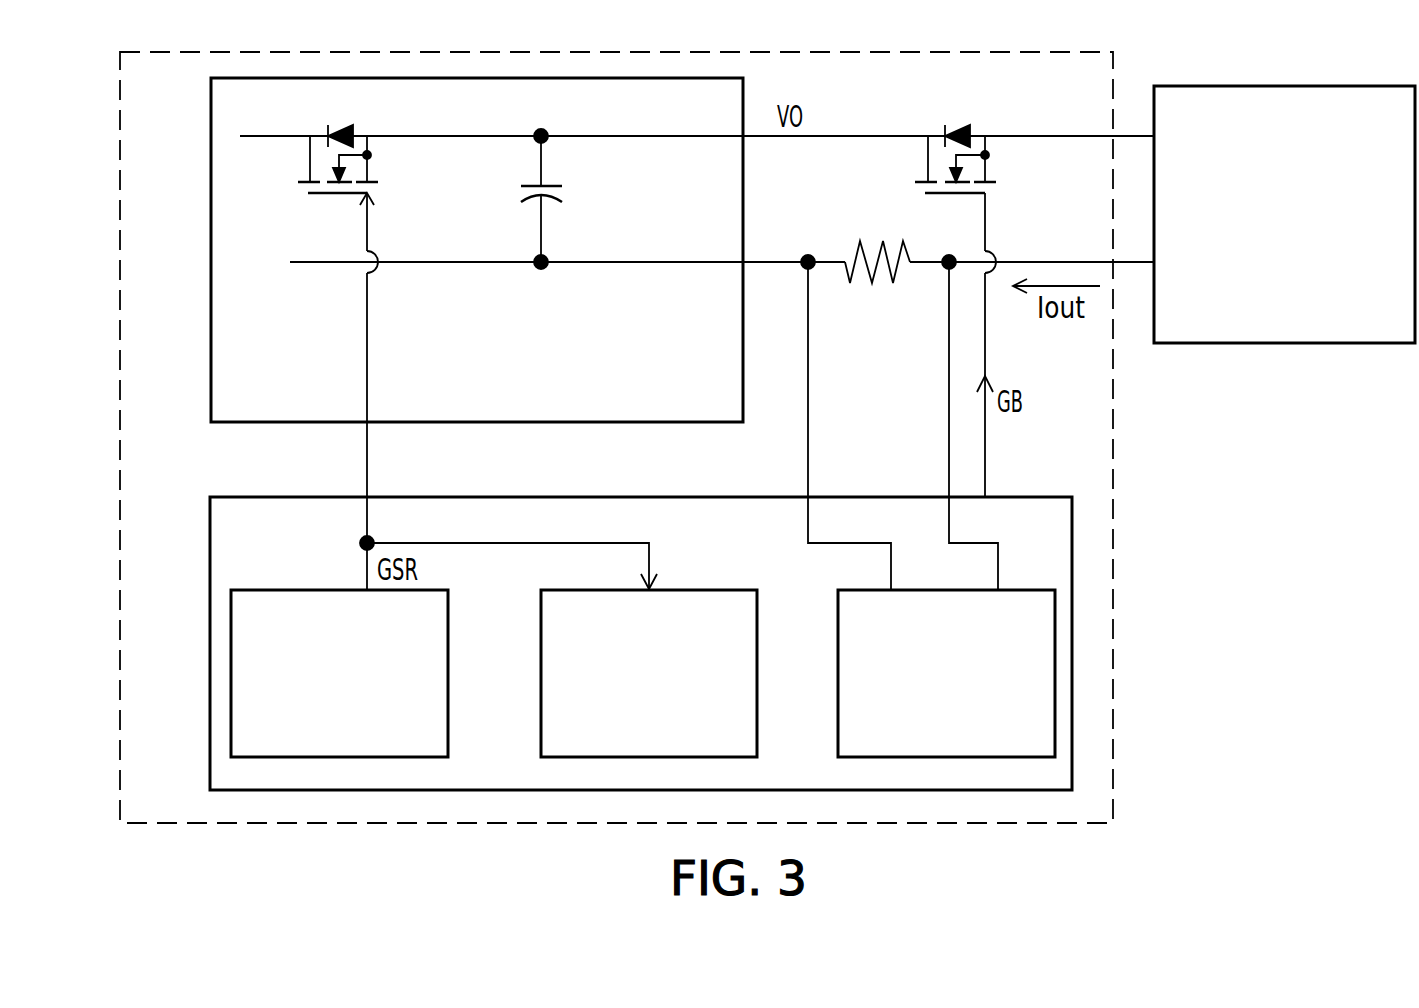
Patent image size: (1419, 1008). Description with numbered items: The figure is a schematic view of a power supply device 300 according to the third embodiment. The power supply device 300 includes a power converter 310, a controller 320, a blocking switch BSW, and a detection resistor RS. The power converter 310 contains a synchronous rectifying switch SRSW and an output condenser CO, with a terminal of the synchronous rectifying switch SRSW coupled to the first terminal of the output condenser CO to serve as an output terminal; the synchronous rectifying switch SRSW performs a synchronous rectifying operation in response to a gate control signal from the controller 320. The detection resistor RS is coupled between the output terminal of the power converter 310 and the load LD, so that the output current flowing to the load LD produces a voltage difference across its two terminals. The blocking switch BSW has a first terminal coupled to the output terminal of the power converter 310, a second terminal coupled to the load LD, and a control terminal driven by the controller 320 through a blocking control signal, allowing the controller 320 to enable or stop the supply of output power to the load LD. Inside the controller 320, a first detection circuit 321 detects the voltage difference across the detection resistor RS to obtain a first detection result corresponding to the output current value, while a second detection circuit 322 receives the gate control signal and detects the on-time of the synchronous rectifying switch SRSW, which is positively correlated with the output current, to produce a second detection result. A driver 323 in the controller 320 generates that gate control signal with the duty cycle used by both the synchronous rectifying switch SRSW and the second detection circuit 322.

The power supply device 300 is at (120, 181).
The power converter 310 is at (211, 248).
The controller 320 is at (210, 644).
The first detection circuit 321 is at (838, 642).
The second detection circuit 322 is at (757, 701).
The driver 323 is at (448, 672).
The synchronous rectifying switch SRSW is at (338, 147).
The blocking switch BSW is at (955, 141).
The output condenser CO is at (557, 199).
The detection resistor RS is at (877, 241).
The load LD is at (1288, 86).